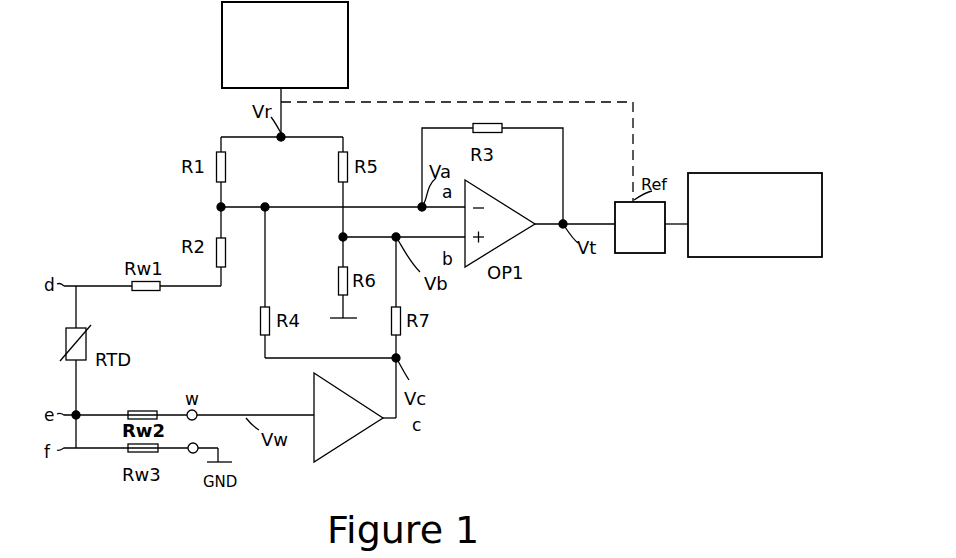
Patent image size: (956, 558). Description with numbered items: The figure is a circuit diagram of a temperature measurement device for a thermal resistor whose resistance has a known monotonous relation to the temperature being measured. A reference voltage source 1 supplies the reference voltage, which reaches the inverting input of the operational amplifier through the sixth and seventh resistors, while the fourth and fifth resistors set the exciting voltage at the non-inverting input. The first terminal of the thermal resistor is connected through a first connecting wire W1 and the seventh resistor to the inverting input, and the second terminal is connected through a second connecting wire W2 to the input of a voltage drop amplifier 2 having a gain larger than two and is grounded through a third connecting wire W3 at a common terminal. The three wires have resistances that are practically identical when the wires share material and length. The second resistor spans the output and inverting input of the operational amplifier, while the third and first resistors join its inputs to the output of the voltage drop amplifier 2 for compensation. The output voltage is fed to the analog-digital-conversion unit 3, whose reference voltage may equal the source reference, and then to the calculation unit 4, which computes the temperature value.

The reference voltage source 1 is at (350, 50).
The voltage drop amplifier 2 is at (358, 435).
The analog-digital-conversion unit 3 is at (633, 253).
The calculation unit 4 is at (745, 257).
The first connecting wire W1 is at (163, 290).
The second connecting wire W2 is at (166, 413).
The third connecting wire W3 is at (171, 451).